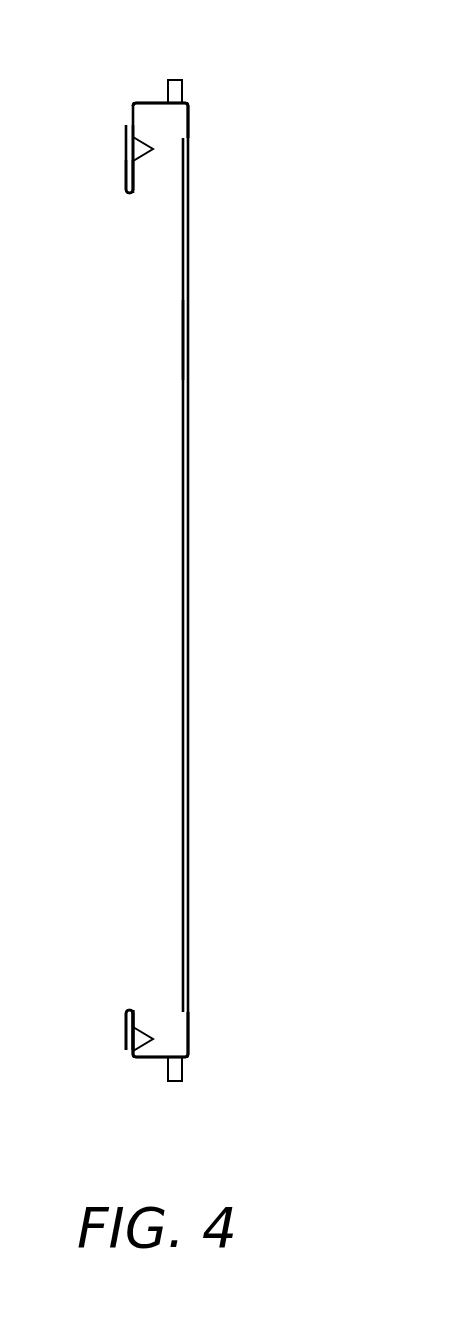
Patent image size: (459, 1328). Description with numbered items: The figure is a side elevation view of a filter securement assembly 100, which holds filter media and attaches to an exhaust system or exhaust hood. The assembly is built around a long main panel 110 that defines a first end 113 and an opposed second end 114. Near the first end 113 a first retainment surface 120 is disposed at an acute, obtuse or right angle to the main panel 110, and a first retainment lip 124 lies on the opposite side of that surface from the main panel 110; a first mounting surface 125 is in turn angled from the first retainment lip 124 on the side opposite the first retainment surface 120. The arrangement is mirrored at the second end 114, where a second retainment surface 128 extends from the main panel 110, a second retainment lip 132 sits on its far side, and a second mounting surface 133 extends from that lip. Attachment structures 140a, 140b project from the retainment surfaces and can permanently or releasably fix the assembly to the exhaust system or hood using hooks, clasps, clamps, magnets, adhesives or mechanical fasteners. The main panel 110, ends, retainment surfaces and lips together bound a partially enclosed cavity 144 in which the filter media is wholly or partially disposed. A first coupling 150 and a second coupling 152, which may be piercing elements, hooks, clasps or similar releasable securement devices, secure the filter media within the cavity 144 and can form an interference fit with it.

The filter securement assembly 100 is at (338, 103).
The main panel 110 is at (188, 562).
The first end 113 is at (207, 118).
The second end 114 is at (207, 1045).
The first retainment surface 120 is at (152, 102).
The first retainment lip 124 is at (137, 166).
The first mounting surface 125 is at (125, 150).
The second retainment surface 128 is at (150, 1058).
The second retainment lip 132 is at (137, 1013).
The second mounting surface 133 is at (125, 1025).
The attachment structure 140a is at (172, 80).
The attachment structure 140b is at (172, 1083).
The cavity 144 is at (158, 340).
The first coupling 150 is at (153, 149).
The second coupling 152 is at (153, 1040).